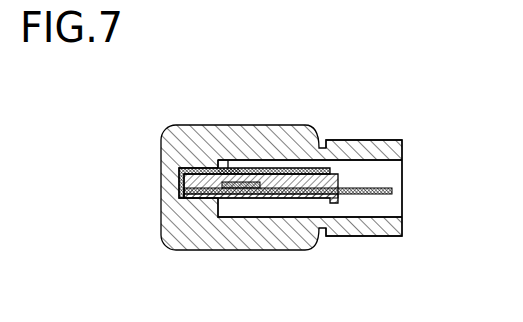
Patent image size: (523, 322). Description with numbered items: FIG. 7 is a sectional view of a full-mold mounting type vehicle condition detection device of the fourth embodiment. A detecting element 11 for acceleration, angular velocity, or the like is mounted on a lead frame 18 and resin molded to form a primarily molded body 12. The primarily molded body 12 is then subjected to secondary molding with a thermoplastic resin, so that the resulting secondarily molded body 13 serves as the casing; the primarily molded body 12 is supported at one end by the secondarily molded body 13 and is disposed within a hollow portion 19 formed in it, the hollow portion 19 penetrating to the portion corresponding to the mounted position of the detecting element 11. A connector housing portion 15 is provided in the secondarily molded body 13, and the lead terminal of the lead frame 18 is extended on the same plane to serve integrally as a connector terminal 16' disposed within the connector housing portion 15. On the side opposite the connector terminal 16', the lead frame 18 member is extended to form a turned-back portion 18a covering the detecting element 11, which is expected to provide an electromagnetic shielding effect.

The detecting element 11 is at (250, 178).
The primarily molded body 12 is at (205, 203).
The secondarily molded body 13 is at (183, 143).
The connector housing portion 15 is at (396, 152).
The connector terminal 16' is at (331, 210).
The lead frame 18 is at (183, 193).
The turned-back portion 18a is at (223, 168).
The hollow portion 19 is at (288, 162).